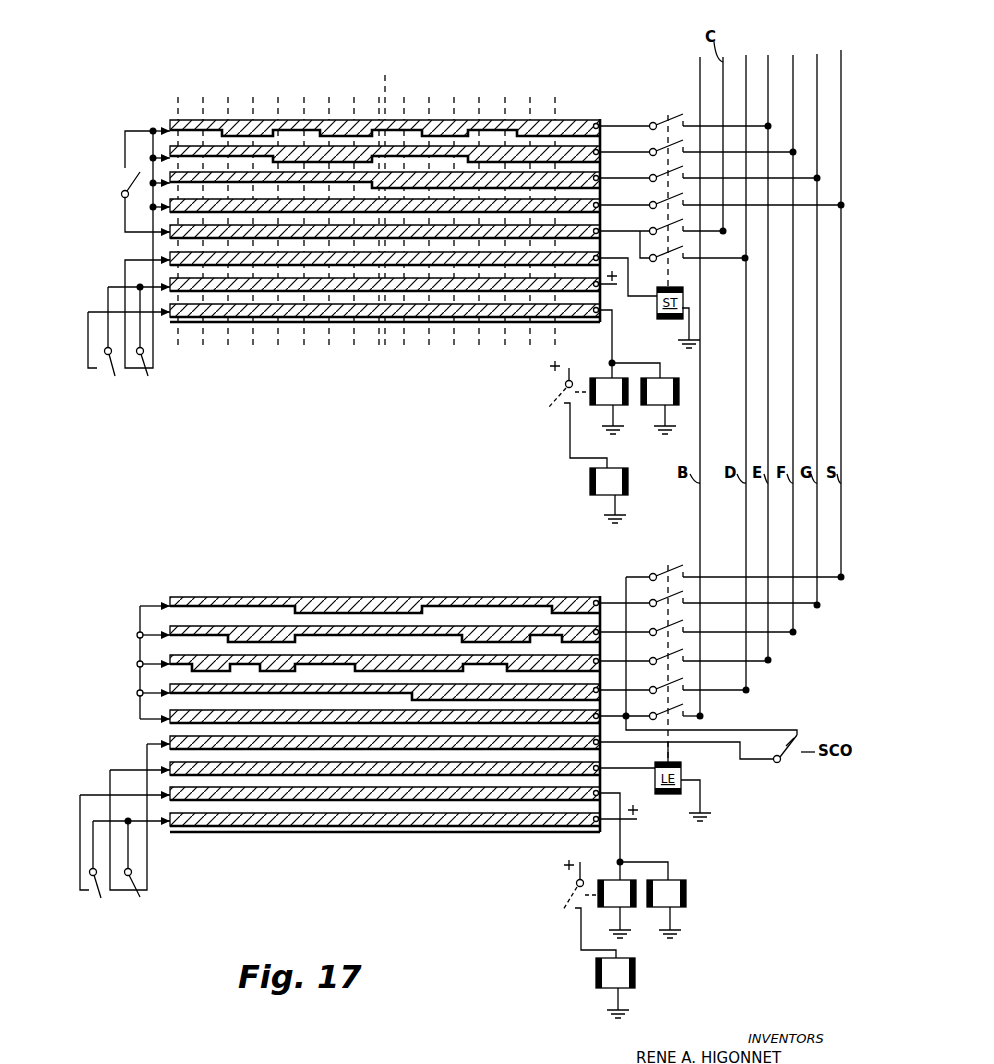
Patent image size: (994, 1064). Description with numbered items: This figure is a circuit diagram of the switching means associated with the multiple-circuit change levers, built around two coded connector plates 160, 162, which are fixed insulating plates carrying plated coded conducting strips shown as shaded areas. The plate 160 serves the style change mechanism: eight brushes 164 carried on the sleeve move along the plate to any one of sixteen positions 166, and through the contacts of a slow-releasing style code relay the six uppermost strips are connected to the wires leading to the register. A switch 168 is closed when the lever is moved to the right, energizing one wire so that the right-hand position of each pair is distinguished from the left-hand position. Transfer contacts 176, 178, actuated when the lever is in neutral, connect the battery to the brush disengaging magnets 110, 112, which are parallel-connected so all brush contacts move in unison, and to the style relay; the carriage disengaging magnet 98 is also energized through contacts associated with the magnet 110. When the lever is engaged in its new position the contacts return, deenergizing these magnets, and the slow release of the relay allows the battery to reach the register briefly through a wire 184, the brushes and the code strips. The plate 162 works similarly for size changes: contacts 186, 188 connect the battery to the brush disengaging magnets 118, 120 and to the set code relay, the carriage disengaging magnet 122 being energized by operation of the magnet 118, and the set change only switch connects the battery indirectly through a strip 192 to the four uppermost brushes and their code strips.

The coded connector plate 160 is at (392, 110).
The coded connector plate 162 is at (425, 576).
The brushes 164 is at (153, 157).
The positions 166 is at (178, 325).
The switch 168 is at (127, 181).
The transfer contacts 176 is at (101, 380).
The transfer contacts 178 is at (149, 380).
The wire 184 is at (150, 248).
The contacts 186 is at (95, 902).
The contacts 188 is at (138, 901).
The strip 192 is at (190, 726).
The carriage disengaging magnet 98 is at (596, 463).
The brush disengaging magnet 110 is at (588, 372).
The brush disengaging magnet 112 is at (645, 398).
The brush disengaging magnet 118 is at (599, 865).
The brush disengaging magnet 120 is at (653, 900).
The carriage disengaging magnet 122 is at (605, 963).